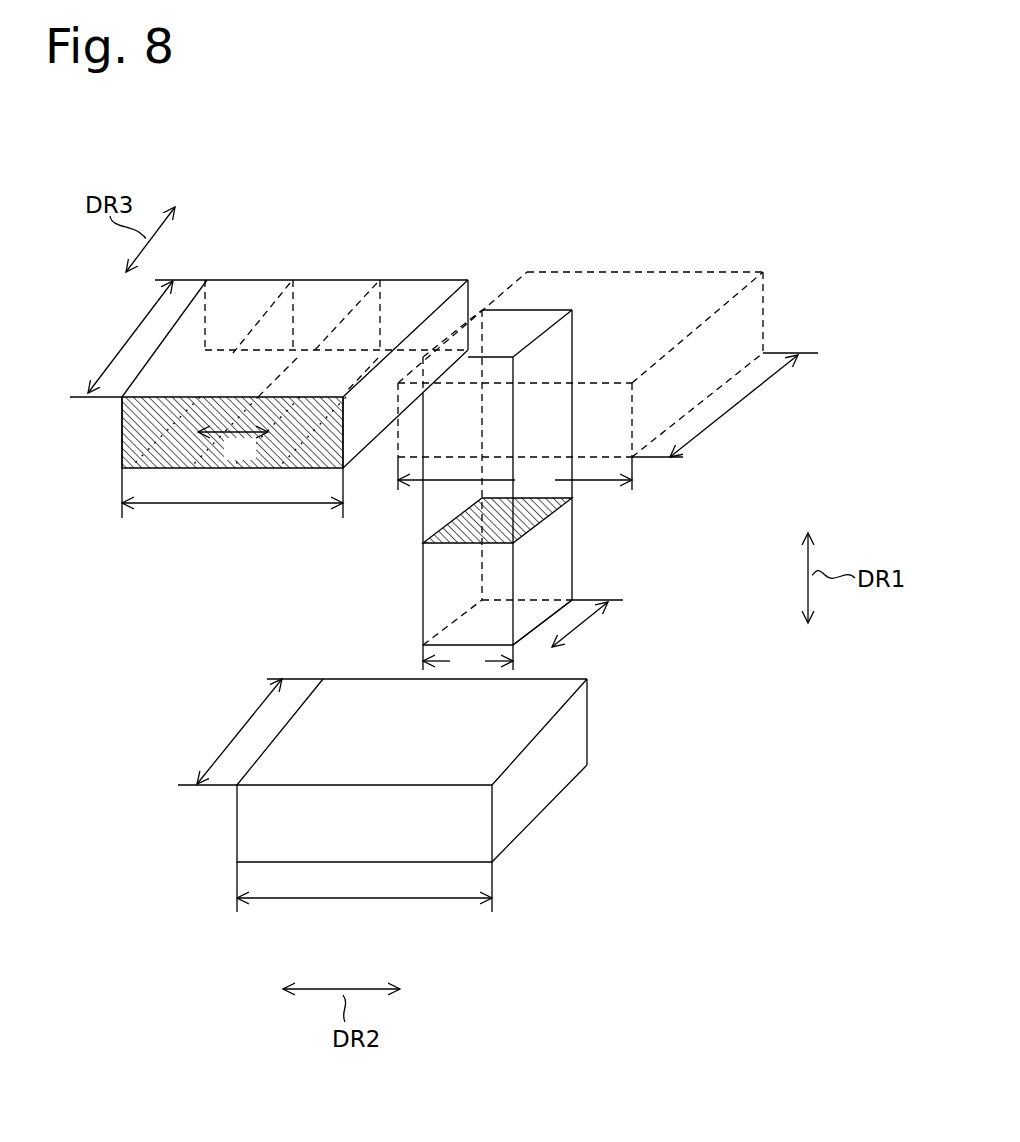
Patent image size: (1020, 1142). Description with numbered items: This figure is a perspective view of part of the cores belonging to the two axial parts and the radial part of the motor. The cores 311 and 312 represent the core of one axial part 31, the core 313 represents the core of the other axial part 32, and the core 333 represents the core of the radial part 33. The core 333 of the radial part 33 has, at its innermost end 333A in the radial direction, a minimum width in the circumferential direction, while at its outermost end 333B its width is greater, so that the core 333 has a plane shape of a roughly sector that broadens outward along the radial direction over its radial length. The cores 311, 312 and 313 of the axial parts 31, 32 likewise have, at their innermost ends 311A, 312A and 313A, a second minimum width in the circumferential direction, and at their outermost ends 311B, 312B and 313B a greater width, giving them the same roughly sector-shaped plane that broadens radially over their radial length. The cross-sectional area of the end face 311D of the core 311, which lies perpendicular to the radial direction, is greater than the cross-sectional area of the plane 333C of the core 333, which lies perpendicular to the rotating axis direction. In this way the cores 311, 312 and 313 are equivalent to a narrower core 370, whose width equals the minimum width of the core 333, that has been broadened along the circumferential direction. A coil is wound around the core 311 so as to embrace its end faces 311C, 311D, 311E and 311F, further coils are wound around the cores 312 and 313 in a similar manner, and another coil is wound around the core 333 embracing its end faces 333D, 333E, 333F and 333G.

The axial part 31 is at (495, 232).
The core 311 is at (346, 296).
The innermost end 311A is at (163, 396).
The outermost end 311B is at (276, 292).
The end face 311C is at (375, 427).
The end face 311D is at (170, 457).
The end face 311E is at (130, 384).
The end face 311F is at (412, 296).
The core 370 is at (272, 316).
The core 312 is at (712, 272).
The innermost end 312A is at (600, 383).
The outermost end 312B is at (652, 272).
The radial part 33 is at (600, 508).
The core 333 is at (558, 572).
The innermost end 333A is at (447, 637).
The outermost end 333B is at (495, 306).
The plane 333C is at (425, 530).
The end face 333D is at (560, 540).
The end face 333E is at (525, 625).
The end face 333F is at (438, 563).
The end face 333G is at (540, 318).
The axial part 32 is at (620, 747).
The core 313 is at (547, 697).
The innermost end 313A is at (370, 785).
The outermost end 313B is at (345, 678).